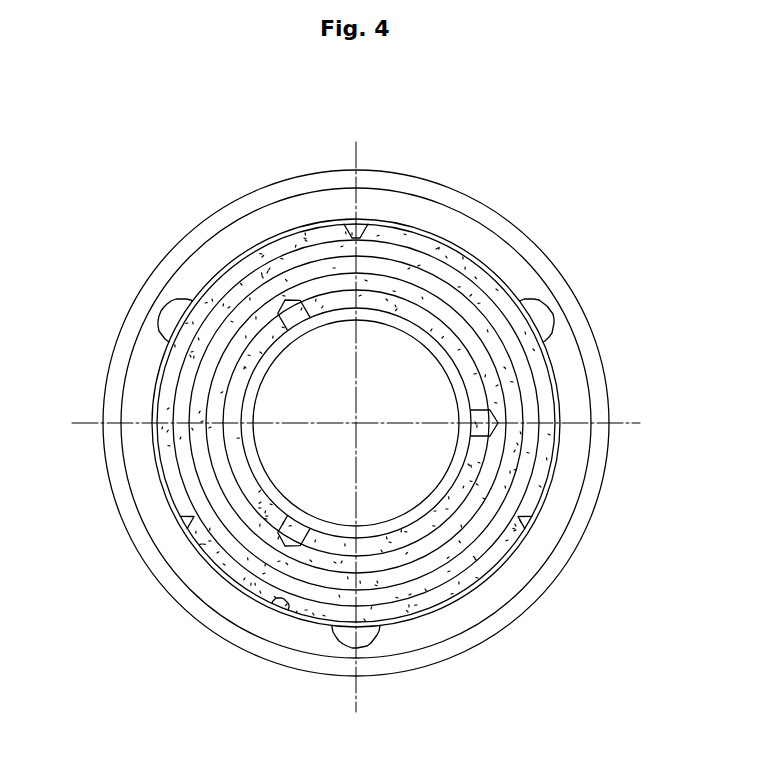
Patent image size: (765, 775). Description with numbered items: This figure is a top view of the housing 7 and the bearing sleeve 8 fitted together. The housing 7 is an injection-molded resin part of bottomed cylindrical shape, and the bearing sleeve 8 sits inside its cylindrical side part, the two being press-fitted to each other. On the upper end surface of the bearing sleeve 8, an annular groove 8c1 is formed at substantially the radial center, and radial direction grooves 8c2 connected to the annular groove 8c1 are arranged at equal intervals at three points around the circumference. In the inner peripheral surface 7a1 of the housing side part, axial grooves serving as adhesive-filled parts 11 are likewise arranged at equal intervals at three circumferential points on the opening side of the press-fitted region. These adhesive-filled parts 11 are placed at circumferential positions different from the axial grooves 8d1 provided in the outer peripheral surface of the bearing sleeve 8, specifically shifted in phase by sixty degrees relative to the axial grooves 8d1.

The housing 7 is at (511, 221).
The inner peripheral surface 7a1 is at (290, 607).
The bearing sleeve 8 is at (480, 575).
The annular groove 8c1 is at (202, 383).
The radial direction groove 8c2 is at (298, 306).
The axial groove 8d1 is at (190, 523).
The adhesive-filled part 11 is at (553, 324).